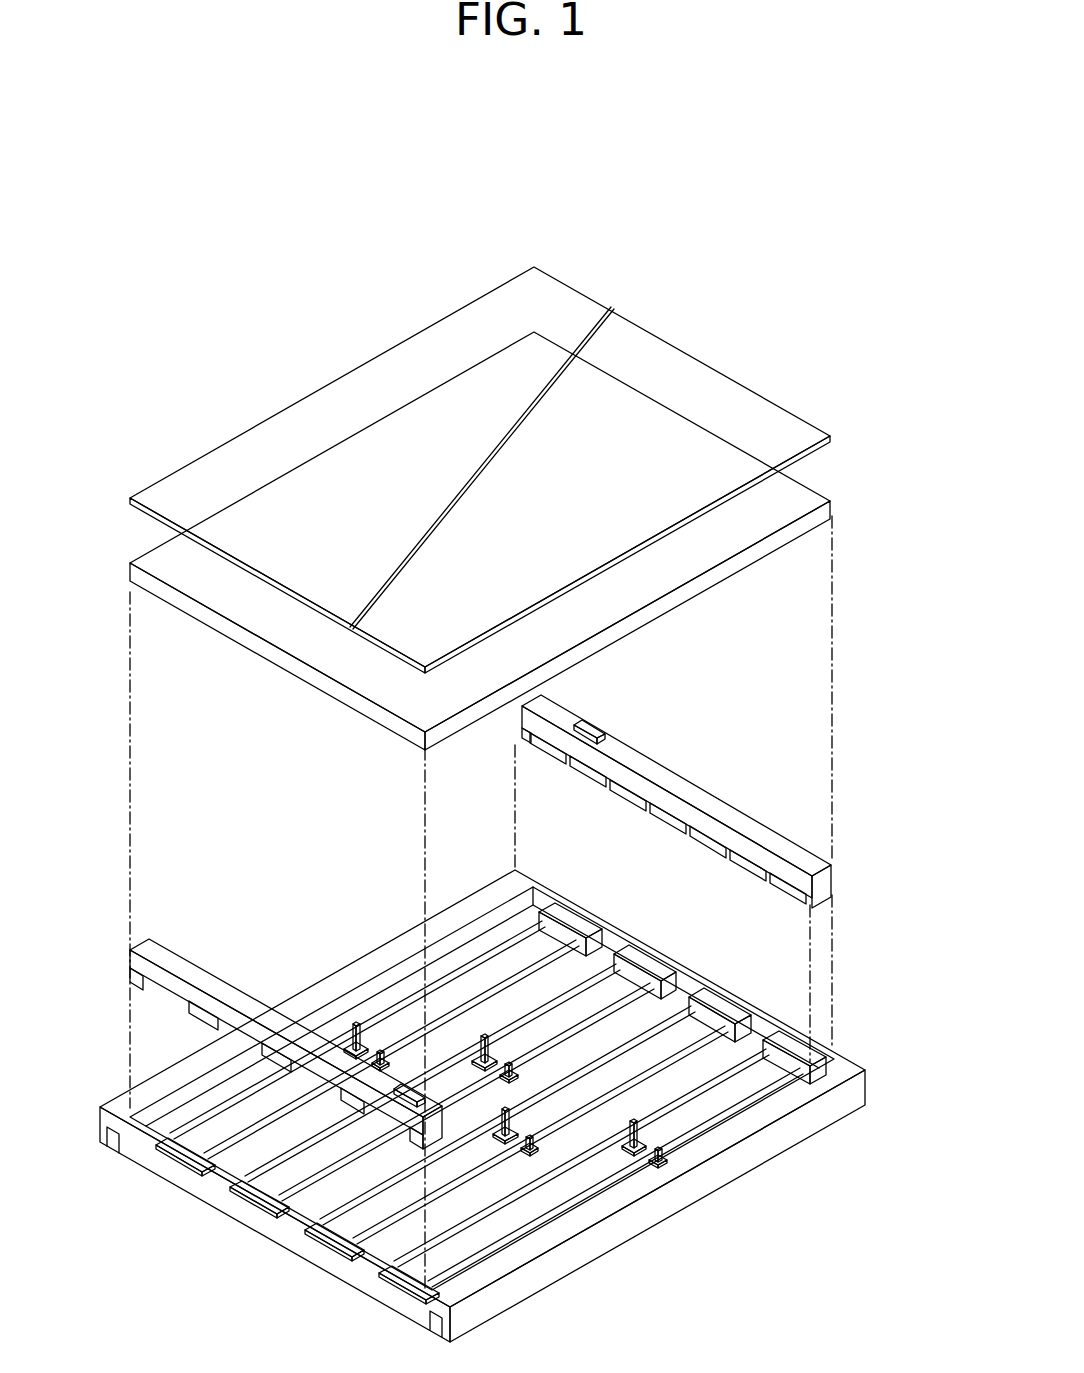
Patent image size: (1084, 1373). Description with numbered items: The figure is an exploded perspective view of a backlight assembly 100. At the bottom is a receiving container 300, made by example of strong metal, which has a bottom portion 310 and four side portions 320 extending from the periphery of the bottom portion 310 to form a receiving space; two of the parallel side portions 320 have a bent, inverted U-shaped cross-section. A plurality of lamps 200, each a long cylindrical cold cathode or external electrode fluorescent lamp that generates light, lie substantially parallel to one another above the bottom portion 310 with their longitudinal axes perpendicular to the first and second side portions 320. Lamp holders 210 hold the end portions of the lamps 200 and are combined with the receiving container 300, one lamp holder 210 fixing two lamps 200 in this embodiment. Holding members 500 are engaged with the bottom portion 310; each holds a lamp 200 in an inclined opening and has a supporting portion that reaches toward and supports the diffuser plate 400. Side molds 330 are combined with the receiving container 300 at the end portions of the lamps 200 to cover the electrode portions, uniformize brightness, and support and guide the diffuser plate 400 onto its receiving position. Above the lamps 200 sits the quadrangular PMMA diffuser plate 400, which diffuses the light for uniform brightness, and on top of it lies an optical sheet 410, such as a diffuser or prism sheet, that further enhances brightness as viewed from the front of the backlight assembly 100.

The backlight assembly 100 is at (533, 228).
The lamps 200 is at (550, 1173).
The lamp holders 210 is at (567, 918).
The receiving container 300 is at (290, 1253).
The bottom portion 310 is at (717, 1063).
The side portions 320 is at (733, 1160).
The side molds 330 is at (770, 836).
The diffuser plate 400 is at (832, 504).
The optical sheet 410 is at (832, 442).
The holding members 500 is at (660, 1160).